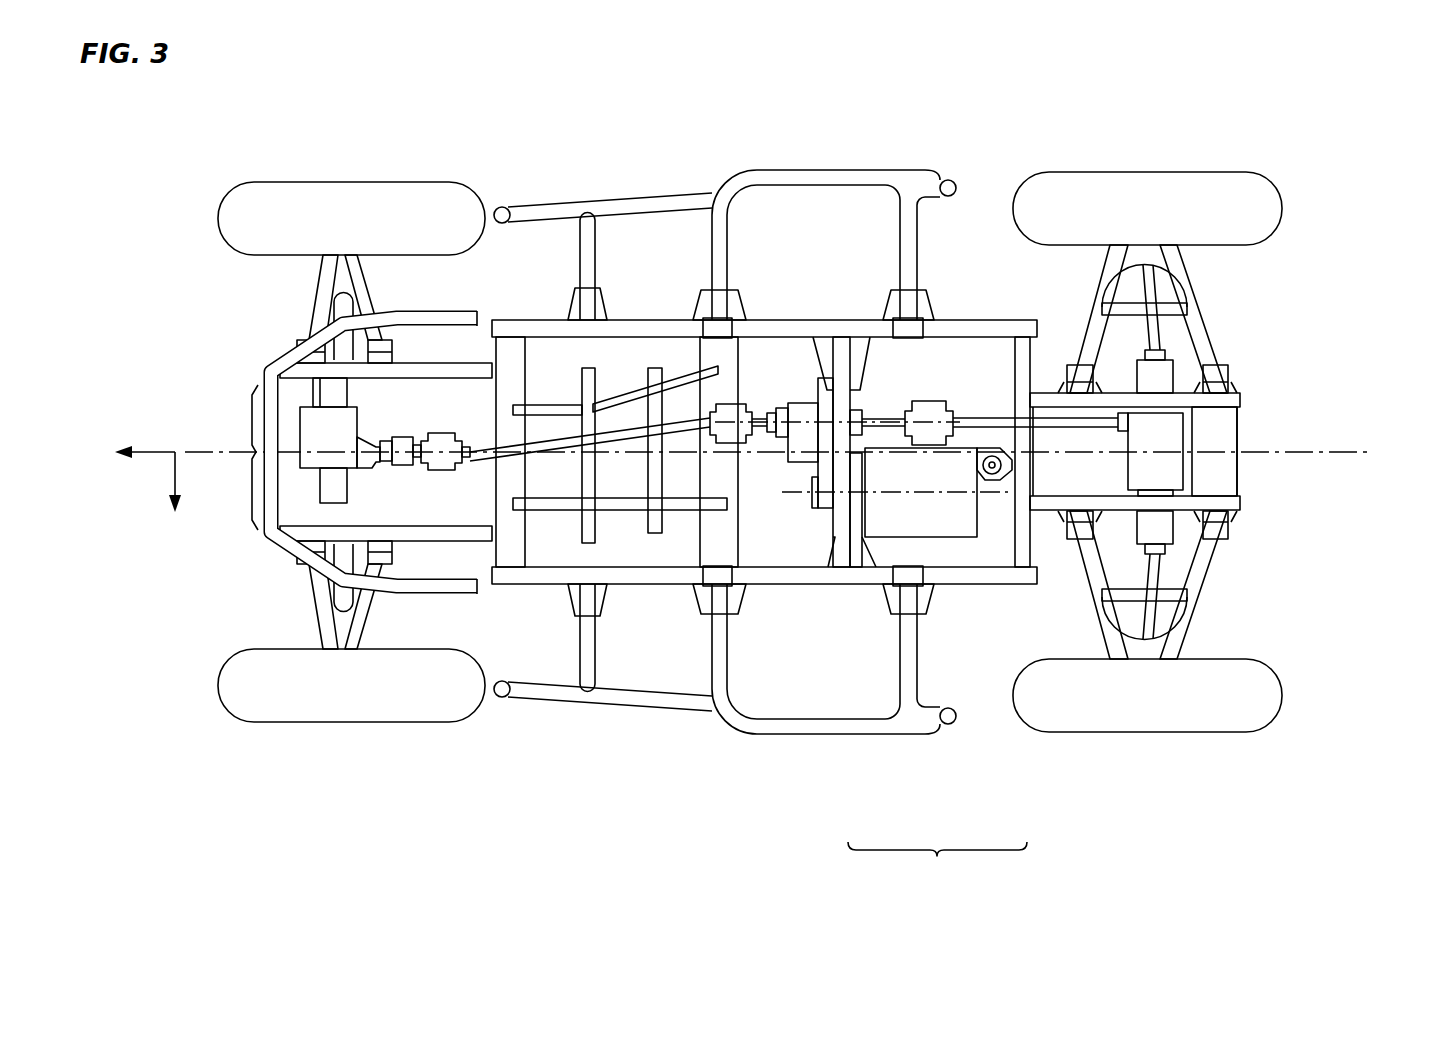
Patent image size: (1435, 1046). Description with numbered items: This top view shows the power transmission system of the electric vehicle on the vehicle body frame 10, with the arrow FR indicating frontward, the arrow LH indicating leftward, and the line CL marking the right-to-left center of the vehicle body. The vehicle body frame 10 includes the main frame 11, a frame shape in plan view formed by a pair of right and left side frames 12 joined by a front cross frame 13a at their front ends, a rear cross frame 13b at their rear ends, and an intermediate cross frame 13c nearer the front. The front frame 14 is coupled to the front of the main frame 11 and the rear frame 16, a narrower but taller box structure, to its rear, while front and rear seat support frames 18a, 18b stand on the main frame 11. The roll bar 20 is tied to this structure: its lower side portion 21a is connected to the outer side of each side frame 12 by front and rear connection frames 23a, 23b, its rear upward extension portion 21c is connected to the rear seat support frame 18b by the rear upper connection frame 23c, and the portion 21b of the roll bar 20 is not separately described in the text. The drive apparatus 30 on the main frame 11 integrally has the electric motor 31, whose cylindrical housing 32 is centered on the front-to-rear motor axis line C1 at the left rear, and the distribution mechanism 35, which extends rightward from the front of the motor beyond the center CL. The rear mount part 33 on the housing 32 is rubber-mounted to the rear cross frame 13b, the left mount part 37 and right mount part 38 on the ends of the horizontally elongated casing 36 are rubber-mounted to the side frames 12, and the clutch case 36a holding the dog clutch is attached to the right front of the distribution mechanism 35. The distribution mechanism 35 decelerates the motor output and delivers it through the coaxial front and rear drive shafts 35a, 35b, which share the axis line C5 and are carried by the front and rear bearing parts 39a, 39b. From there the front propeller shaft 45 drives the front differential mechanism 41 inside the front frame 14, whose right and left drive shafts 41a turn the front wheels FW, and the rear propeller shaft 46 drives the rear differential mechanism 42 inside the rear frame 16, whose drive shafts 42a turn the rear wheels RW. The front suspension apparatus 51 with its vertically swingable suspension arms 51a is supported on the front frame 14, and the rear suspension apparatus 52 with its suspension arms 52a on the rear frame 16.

The vehicle body frame 10 is at (758, 391).
The main frame 11 is at (758, 391).
The side frames 12 is at (670, 332).
The front cross frame 13a is at (512, 352).
The rear cross frame 13b is at (1022, 360).
The intermediate cross frame 13c is at (740, 352).
The front frame 14 is at (254, 362).
The rear frame 16 is at (1250, 395).
The front seat support frame 18a is at (718, 328).
The rear seat support frame 18b is at (920, 328).
The roll bar 20 is at (735, 463).
The lower side portion 21a is at (795, 168).
The front pipe end 21b is at (500, 207).
The rear upward extension portion 21c is at (953, 182).
The front connection frame 23a is at (583, 250).
The rear connection frame 23b is at (716, 246).
The rear upper connection frame 23c is at (906, 230).
The drive apparatus 30 is at (841, 540).
The electric motor 31 is at (903, 606).
The housing 32 is at (972, 520).
The rear mount part 33 is at (988, 455).
The distribution mechanism 35 is at (803, 519).
The front drive shaft 35a is at (811, 490).
The rear drive shaft 35b is at (878, 428).
The casing 36 is at (803, 440).
The clutch case 36a is at (800, 412).
The left mount part 37 is at (854, 568).
The right mount part 38 is at (840, 368).
The front bearing part 39a is at (728, 445).
The rear bearing part 39b is at (933, 402).
The front differential mechanism 41 is at (355, 427).
The drive shafts 41a is at (340, 305).
The rear differential mechanism 42 is at (1170, 436).
The drive shafts 42a is at (1160, 345).
The front propeller shaft 45 is at (627, 432).
The rear propeller shaft 46 is at (1046, 420).
The front suspension apparatus 51 is at (336, 453).
The suspension arm 51a is at (375, 262).
The rear suspension apparatus 52 is at (1227, 445).
The suspension arm 52a is at (1190, 290).
The front wheels FW is at (266, 190).
The rear wheels RW is at (1245, 175).
The center line CL is at (203, 450).
The motor axis line C1 is at (800, 495).
The axis line C5 is at (782, 418).
The arrow FR is at (126, 451).
The arrow LH is at (174, 499).